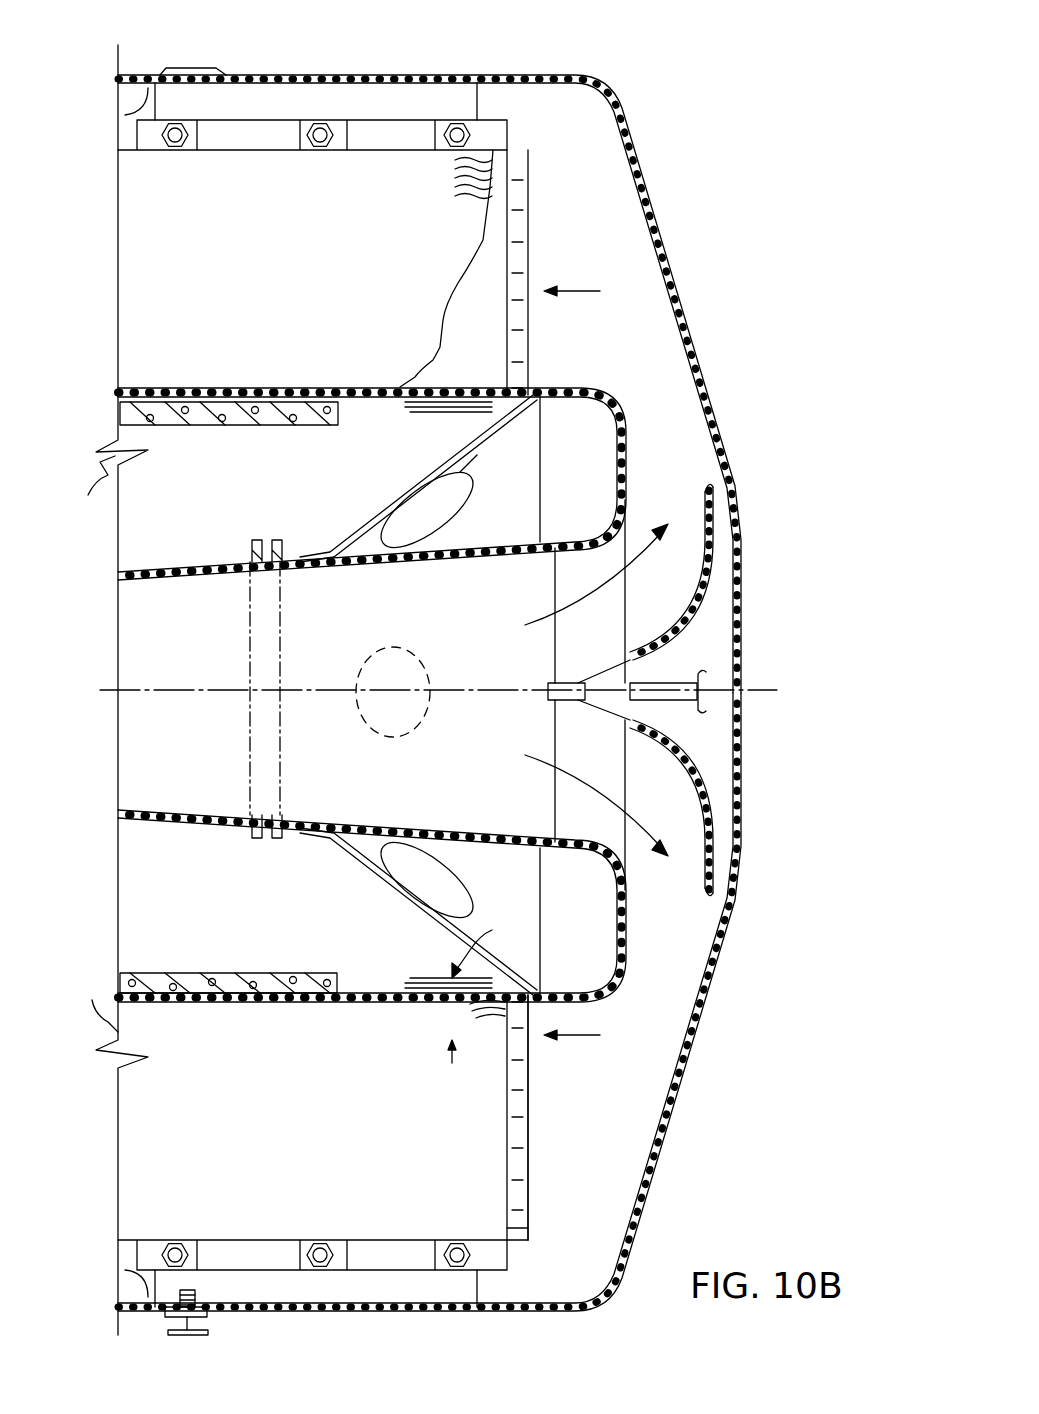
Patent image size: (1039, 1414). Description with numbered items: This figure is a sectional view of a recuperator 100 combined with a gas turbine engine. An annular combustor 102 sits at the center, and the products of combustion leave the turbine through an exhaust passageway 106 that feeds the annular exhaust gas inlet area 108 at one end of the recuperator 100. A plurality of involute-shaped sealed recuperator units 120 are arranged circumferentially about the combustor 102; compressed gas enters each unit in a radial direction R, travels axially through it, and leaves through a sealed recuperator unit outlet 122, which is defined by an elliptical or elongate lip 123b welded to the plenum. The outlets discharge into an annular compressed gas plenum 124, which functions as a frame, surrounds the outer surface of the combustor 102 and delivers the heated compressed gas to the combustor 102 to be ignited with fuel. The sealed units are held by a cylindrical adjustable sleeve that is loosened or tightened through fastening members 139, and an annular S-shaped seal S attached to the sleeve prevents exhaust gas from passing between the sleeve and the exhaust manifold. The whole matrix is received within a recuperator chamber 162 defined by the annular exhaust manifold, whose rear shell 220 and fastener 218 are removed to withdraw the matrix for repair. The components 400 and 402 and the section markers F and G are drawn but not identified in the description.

The recuperator 100 is at (398, 125).
The rear shell 220 is at (636, 157).
The sealed recuperator unit 120 is at (462, 248).
The elongate lip 123b is at (467, 405).
The sealed recuperator unit outlet 122 is at (402, 420).
The annular shaped compressed gas plenum 124 is at (272, 480).
The perforated plate 400 is at (175, 426).
The annular combustor 102 is at (198, 566).
The bracket 402 is at (247, 856).
The exhaust passageway 106 is at (265, 632).
The annular exhaust gas inlet area 108 is at (530, 1123).
The recuperator chamber 162 is at (620, 1185).
The fastening members 139 is at (530, 1222).
The fastener 218 is at (210, 1327).
The annular S-shaped seal S is at (118, 105).
The section F is at (95, 491).
The section G is at (98, 1014).
The radial direction R is at (489, 943).